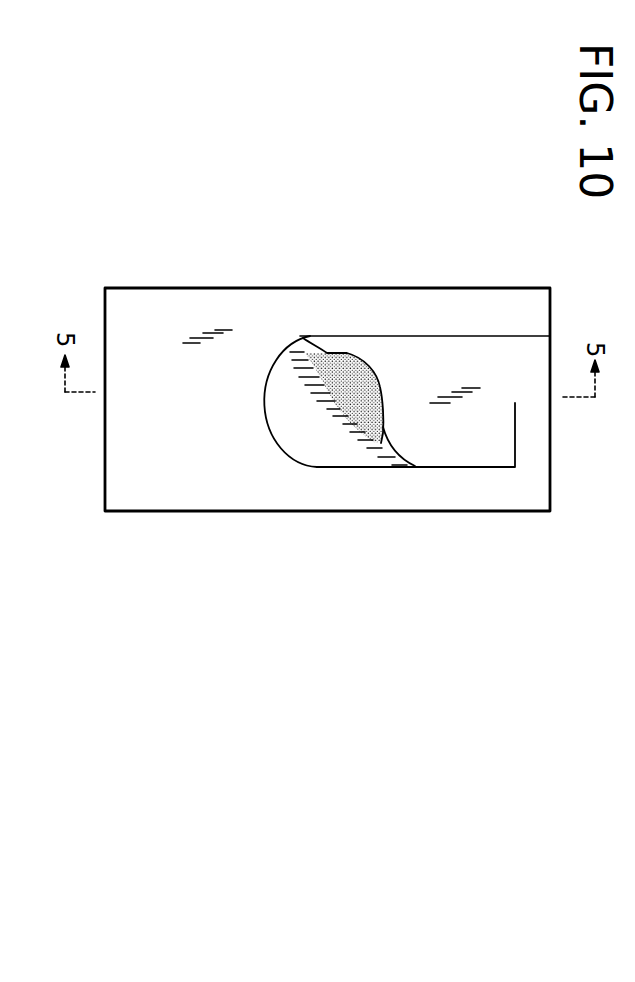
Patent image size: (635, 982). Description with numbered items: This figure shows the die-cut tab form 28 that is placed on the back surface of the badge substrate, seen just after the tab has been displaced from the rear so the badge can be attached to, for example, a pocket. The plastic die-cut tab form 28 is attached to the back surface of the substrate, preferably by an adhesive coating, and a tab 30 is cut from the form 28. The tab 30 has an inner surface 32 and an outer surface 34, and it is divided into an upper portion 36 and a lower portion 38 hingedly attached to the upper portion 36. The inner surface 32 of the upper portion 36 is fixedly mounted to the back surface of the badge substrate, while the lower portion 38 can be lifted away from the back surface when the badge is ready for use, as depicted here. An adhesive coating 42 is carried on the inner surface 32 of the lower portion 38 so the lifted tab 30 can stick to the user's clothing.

The die-cut tab form 28 is at (297, 492).
The tab 30 is at (426, 404).
The inner surface 32 is at (415, 466).
The outer surface 34 is at (375, 358).
The upper portion 36 is at (498, 448).
The lower portion 38 is at (335, 348).
The adhesive coating 42 is at (357, 398).